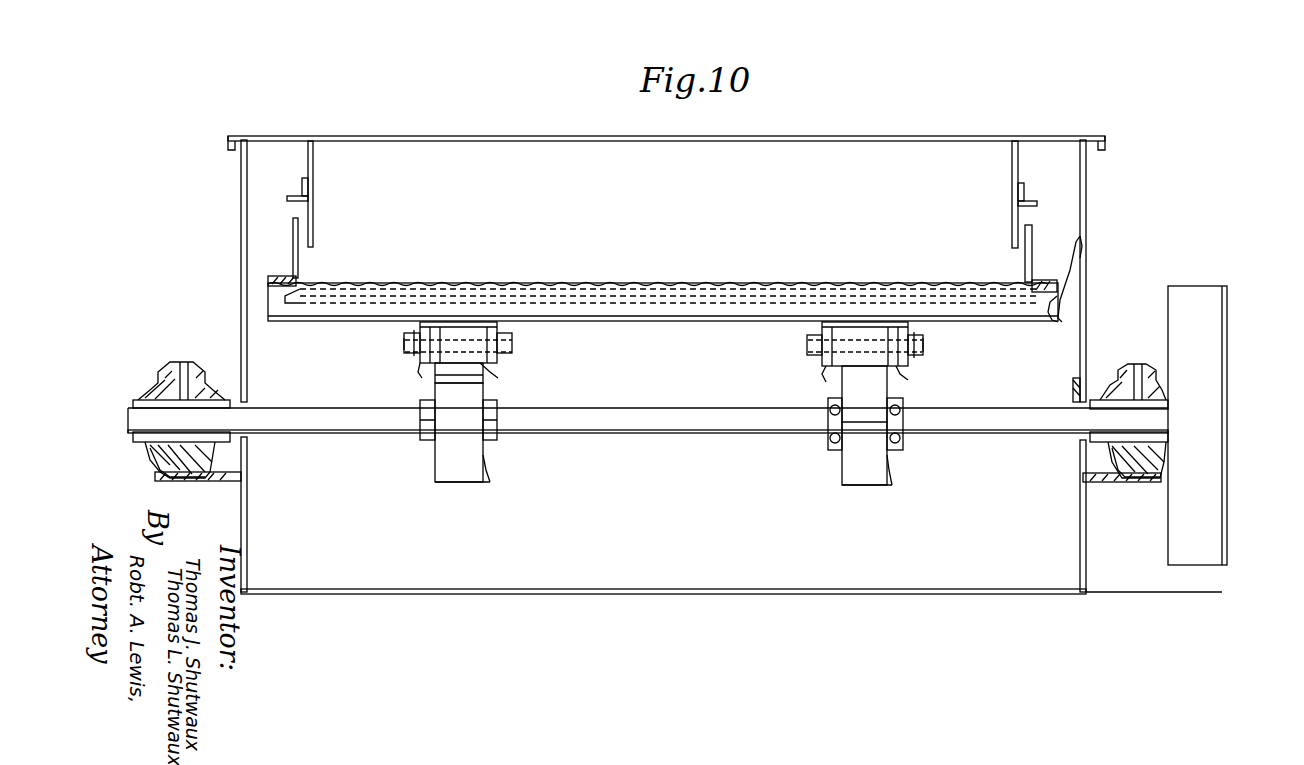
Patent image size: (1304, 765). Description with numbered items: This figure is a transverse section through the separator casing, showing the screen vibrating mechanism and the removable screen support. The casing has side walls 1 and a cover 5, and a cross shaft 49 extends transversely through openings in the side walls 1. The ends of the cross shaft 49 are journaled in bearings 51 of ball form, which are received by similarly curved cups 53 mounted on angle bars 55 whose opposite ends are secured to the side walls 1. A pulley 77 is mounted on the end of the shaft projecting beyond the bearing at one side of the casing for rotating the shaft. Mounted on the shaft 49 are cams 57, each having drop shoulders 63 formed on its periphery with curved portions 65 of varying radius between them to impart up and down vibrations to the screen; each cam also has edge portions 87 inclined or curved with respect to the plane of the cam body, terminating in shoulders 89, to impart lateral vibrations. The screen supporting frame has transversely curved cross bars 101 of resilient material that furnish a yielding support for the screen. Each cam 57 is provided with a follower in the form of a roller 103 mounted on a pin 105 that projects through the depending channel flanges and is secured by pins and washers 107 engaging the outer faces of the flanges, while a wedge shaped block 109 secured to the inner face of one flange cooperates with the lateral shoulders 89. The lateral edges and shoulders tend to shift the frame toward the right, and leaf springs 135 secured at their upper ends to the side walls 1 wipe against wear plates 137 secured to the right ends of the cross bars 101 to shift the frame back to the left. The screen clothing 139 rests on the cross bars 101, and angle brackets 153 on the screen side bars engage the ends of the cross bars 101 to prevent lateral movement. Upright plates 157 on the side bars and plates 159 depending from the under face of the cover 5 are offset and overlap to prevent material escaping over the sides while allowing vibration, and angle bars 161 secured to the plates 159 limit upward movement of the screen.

The side wall 1 is at (240, 292).
The cover 5 is at (621, 137).
The cross shaft 49 is at (588, 409).
The bearing 51 is at (170, 448).
The cup 53 is at (175, 465).
The angle bar 55 is at (218, 482).
The cam 57 is at (438, 458).
The drop shoulder 63 is at (440, 376).
The curved portion 65 is at (420, 416).
The pulley 77 is at (1224, 418).
The edge portion 87 is at (490, 464).
The shoulder 89 is at (488, 480).
The cross bar 101 is at (624, 306).
The roller 103 is at (458, 338).
The pin 105 is at (512, 343).
The pins and washers 107 is at (418, 365).
The wedge shaped block 109 is at (404, 338).
The leaf spring 135 is at (1060, 306).
The wear plate 137 is at (1066, 300).
The screen clothing 139 is at (748, 286).
The angle bracket 153 is at (268, 282).
The upright plate 157 is at (298, 262).
The plate 159 is at (313, 172).
The angle bar 161 is at (296, 196).